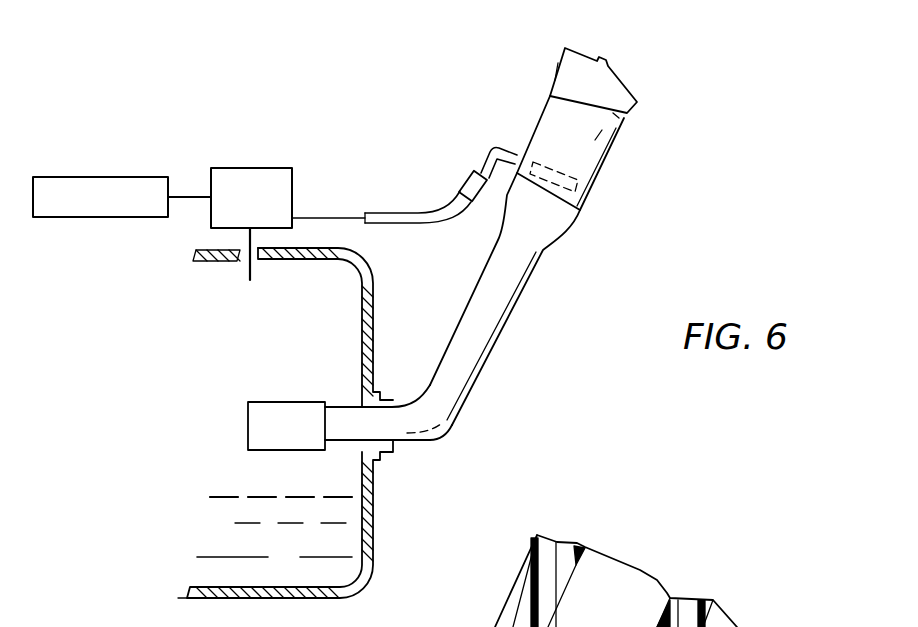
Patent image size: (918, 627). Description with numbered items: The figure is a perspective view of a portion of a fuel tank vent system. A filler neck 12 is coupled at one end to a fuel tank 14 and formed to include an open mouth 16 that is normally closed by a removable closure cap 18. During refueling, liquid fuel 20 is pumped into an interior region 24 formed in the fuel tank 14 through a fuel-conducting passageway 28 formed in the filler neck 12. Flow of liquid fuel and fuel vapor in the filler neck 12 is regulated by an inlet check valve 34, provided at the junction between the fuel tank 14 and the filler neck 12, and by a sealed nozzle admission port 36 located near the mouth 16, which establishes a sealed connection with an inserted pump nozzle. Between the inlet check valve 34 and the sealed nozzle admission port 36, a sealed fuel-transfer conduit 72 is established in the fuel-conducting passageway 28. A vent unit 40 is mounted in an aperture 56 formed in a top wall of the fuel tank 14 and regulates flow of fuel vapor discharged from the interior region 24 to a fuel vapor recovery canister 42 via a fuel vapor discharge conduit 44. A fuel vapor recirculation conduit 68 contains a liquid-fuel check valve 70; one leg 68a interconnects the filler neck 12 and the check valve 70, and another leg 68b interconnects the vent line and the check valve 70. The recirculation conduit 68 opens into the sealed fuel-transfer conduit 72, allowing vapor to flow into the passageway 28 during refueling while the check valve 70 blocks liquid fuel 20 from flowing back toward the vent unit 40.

The filler neck 12 is at (545, 283).
The fuel tank 14 is at (393, 536).
The open mouth 16 is at (803, 626).
The closure cap 18 is at (640, 78).
The liquid fuel 20 is at (238, 518).
The interior region 24 is at (340, 340).
The fuel-conducting passageway 28 is at (465, 363).
The inlet check valve 34 is at (289, 392).
The sealed nozzle admission port 36 is at (605, 185).
The vent unit 40 is at (293, 182).
The fuel vapor recovery canister 42 is at (99, 177).
The fuel vapor discharge conduit 44 is at (183, 196).
The aperture 56 is at (258, 260).
The fuel vapor recirculation conduit 68 is at (410, 202).
The leg 68a is at (497, 145).
The leg 68b is at (375, 212).
The liquid-fuel check valve 70 is at (463, 176).
The sealed fuel-transfer conduit 72 is at (478, 320).